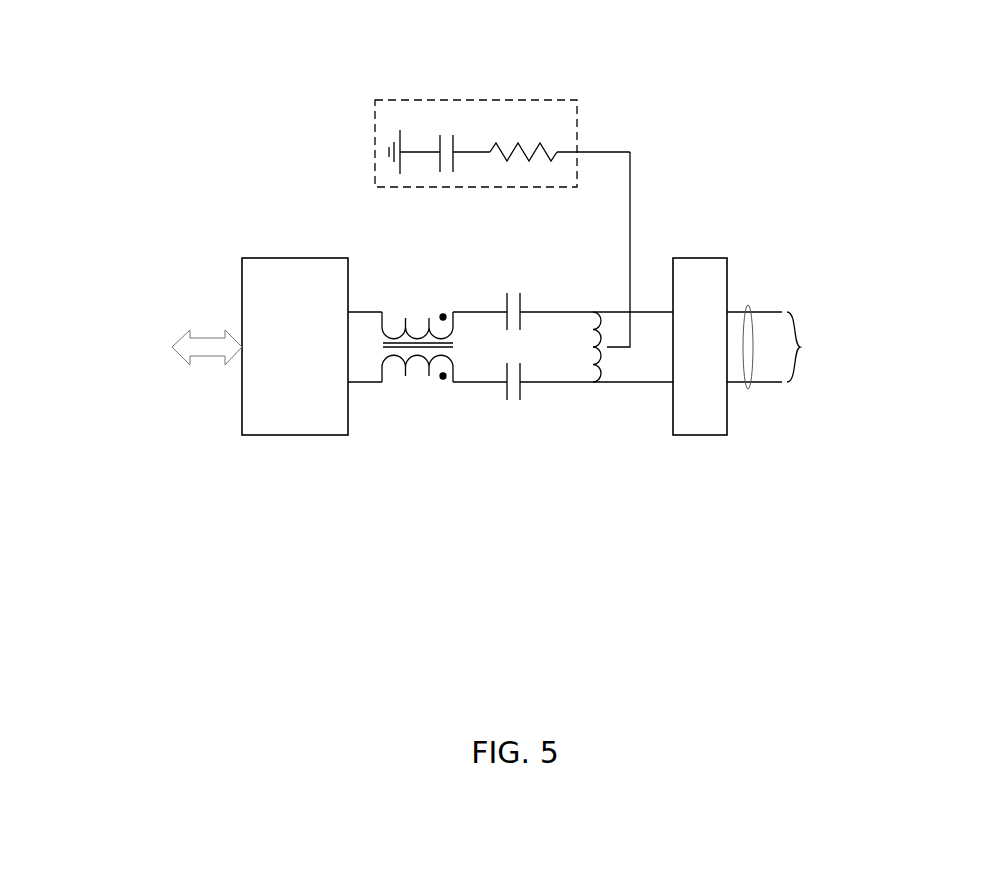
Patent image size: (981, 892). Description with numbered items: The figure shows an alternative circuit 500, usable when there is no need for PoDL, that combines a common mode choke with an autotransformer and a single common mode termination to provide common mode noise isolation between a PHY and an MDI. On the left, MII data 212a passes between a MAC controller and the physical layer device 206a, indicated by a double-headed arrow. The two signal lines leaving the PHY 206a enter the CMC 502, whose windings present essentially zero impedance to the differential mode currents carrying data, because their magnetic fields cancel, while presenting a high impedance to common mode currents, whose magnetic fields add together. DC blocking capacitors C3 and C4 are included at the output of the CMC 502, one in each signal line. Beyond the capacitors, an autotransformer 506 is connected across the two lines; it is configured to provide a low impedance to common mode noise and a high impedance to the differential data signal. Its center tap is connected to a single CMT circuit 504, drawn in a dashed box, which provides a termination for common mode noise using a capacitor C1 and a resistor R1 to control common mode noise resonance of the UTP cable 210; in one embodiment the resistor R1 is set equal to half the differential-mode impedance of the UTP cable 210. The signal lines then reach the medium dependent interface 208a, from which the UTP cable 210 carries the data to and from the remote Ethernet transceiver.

The alternative circuit 500 is at (806, 652).
The CMC 502 is at (417, 312).
The CMT circuit 504 is at (416, 120).
The autotransformer 506 is at (587, 355).
The physical layer device (PHY) 206a is at (293, 258).
The medium dependent interface (MDI) 208a is at (700, 258).
The UTP cable 210 is at (748, 388).
The MII data 212a is at (207, 363).
The capacitor C1 is at (447, 141).
The resistor R1 is at (523, 141).
The DC blocking capacitor C3 is at (514, 299).
The DC blocking capacitor C4 is at (514, 393).